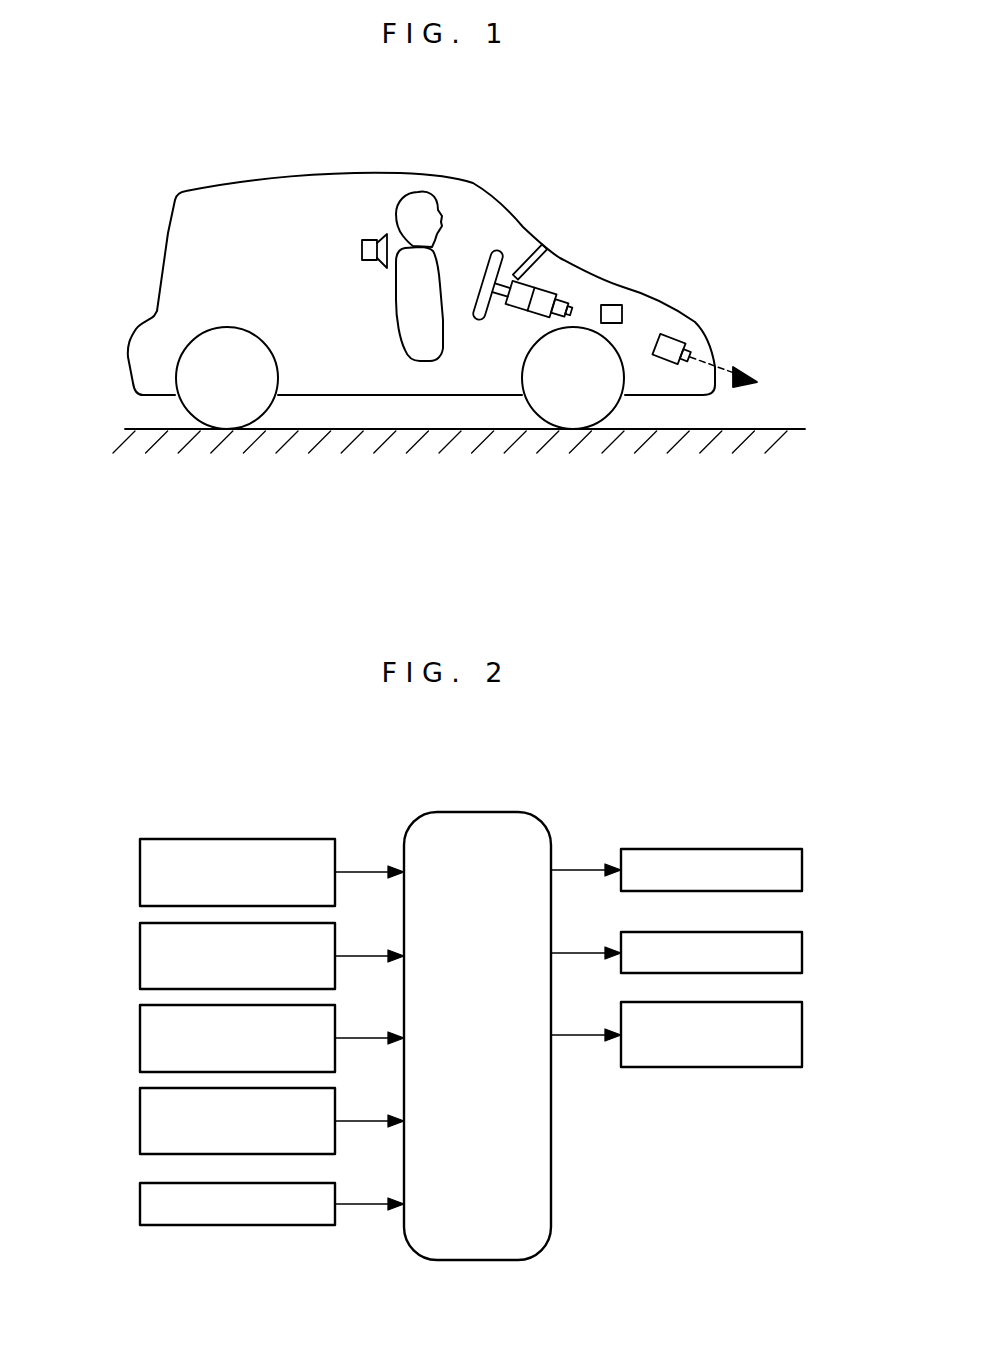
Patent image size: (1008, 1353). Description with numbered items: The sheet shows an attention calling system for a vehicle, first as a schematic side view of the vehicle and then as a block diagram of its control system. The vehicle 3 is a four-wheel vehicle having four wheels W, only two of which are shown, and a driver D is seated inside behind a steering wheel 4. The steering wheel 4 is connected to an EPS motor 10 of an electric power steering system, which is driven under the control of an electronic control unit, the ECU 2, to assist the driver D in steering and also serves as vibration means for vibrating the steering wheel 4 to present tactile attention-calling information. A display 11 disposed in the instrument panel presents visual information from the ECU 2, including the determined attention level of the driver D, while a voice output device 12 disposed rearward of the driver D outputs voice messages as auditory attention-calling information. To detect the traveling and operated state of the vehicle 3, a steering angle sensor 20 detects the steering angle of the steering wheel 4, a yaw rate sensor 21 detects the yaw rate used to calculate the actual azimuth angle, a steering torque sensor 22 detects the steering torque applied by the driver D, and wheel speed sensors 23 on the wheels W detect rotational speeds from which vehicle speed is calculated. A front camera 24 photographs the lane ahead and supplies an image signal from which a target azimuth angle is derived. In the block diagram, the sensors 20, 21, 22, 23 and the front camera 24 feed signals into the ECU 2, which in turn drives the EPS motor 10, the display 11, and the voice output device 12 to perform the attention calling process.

In FIG. 2, the electronic control unit (ECU) 2 is at (511, 811).
In FIG. 1, the vehicle 3 is at (262, 177).
In FIG. 1, the steering wheel 4 is at (495, 255).
In FIG. 2, the EPS motor 10 is at (803, 856).
In FIG. 1, the display 11 is at (521, 278).
In FIG. 2, the display 11 is at (803, 939).
In FIG. 1, the voice output device 12 is at (369, 240).
In FIG. 2, the voice output device 12 is at (803, 1023).
In FIG. 1, the steering angle sensor 20 is at (534, 290).
In FIG. 2, the steering angle sensor 20 is at (139, 859).
In FIG. 1, the yaw rate sensor 21 is at (622, 305).
In FIG. 2, the yaw rate sensor 21 is at (139, 942).
In FIG. 1, the steering torque sensor 22 is at (552, 288).
In FIG. 2, the steering torque sensor 22 is at (139, 1026).
In FIG. 2, the wheel speed sensors 23 is at (139, 1111).
In FIG. 1, the front camera 24 is at (683, 337).
In FIG. 2, the front camera 24 is at (139, 1197).
In FIG. 1, the driver D is at (414, 190).
In FIG. 1, the wheels W is at (272, 408).